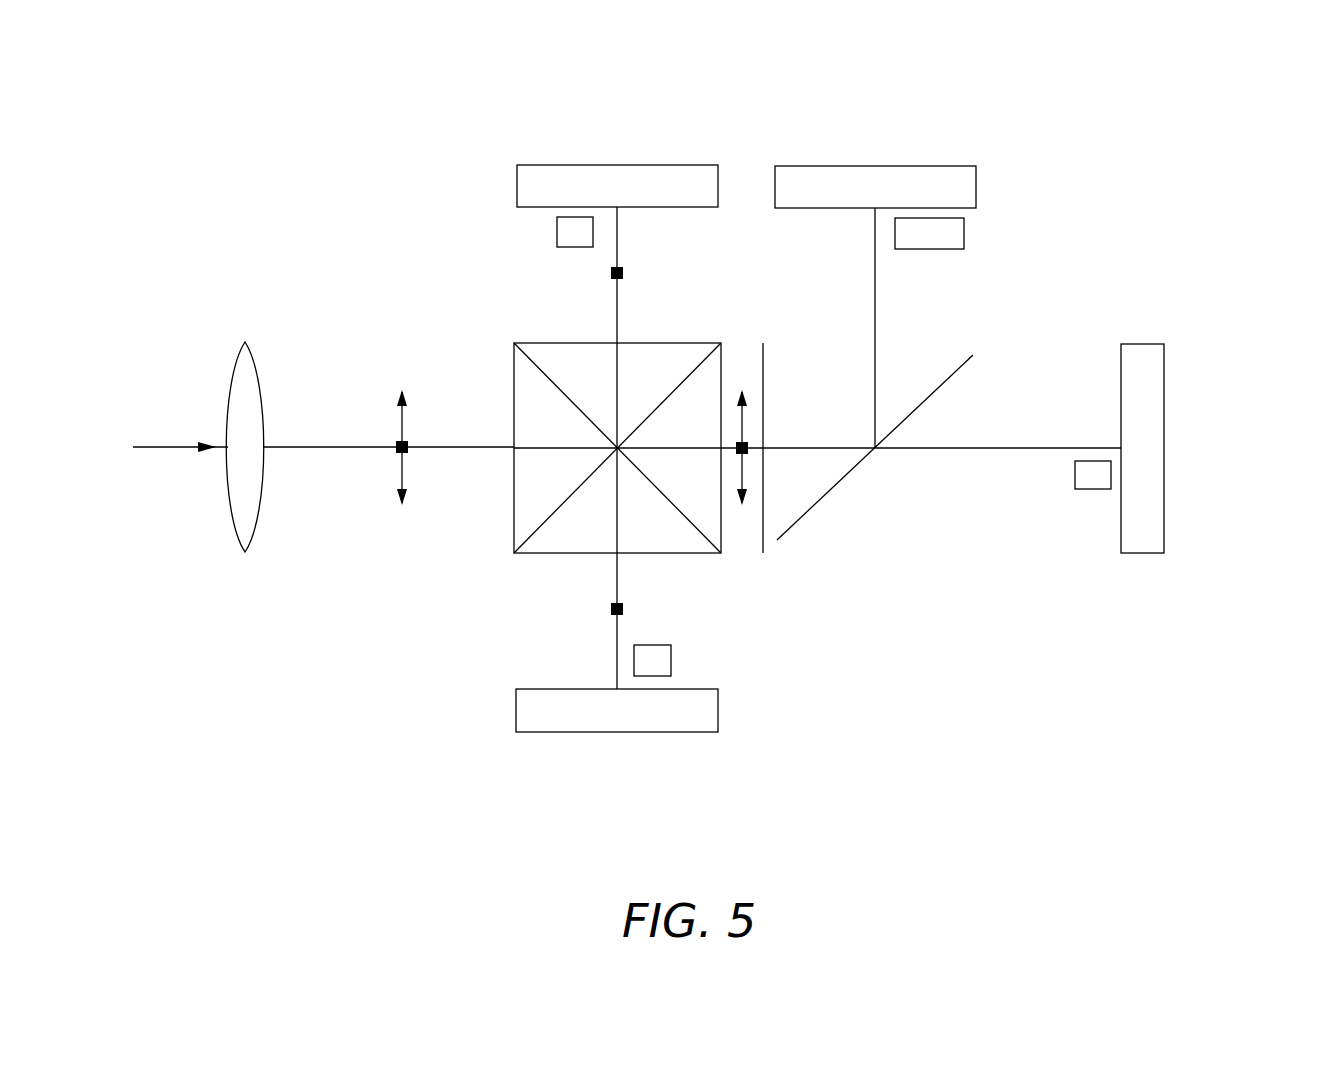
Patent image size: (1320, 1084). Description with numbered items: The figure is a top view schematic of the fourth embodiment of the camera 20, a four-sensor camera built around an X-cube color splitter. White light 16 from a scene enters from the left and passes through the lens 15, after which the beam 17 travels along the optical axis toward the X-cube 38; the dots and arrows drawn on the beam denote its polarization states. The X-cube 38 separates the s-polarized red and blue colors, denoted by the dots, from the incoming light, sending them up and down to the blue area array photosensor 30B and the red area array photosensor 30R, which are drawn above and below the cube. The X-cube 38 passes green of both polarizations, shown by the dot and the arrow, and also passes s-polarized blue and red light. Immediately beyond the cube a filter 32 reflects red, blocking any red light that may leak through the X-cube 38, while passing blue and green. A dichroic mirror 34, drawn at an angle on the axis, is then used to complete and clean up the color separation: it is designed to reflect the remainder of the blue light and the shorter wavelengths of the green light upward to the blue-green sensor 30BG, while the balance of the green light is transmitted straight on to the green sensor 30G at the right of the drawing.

The camera 20 is at (1208, 137).
The white light 16 is at (178, 446).
The lens 15 is at (245, 342).
The polarized light beam 17 is at (350, 446).
The X-cube 38 is at (553, 343).
The filter 32 is at (762, 364).
The dichroic mirror 34 is at (940, 383).
The blue area array photosensor 30B is at (616, 165).
The blue-green sensor 30BG is at (875, 165).
The green sensor 30G is at (1164, 368).
The red area array photosensor 30R is at (552, 689).